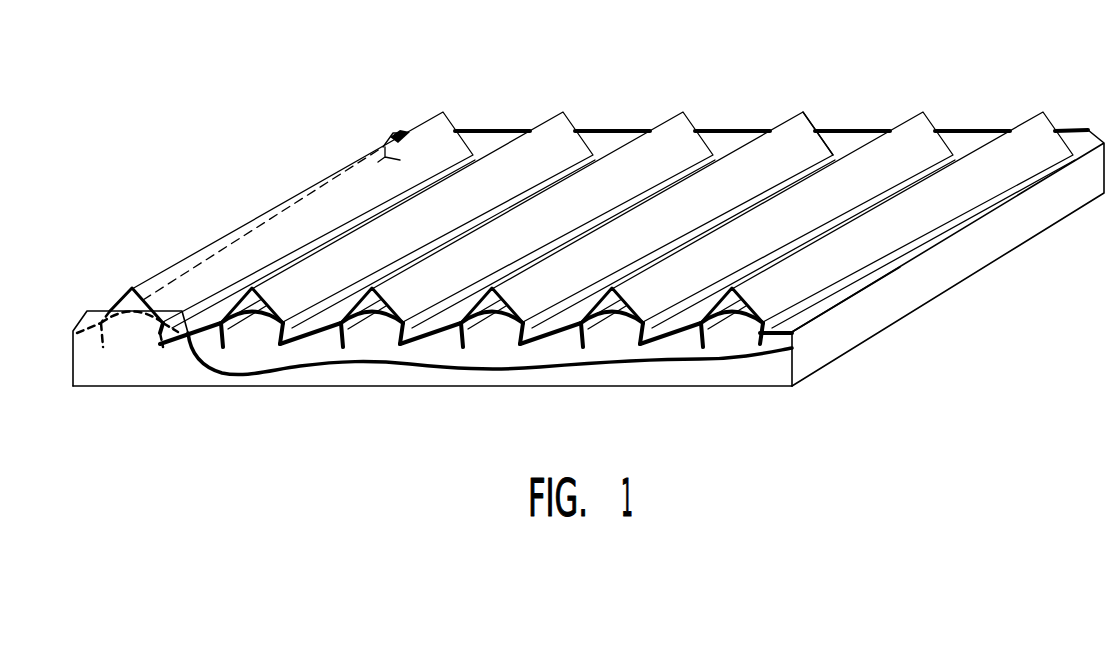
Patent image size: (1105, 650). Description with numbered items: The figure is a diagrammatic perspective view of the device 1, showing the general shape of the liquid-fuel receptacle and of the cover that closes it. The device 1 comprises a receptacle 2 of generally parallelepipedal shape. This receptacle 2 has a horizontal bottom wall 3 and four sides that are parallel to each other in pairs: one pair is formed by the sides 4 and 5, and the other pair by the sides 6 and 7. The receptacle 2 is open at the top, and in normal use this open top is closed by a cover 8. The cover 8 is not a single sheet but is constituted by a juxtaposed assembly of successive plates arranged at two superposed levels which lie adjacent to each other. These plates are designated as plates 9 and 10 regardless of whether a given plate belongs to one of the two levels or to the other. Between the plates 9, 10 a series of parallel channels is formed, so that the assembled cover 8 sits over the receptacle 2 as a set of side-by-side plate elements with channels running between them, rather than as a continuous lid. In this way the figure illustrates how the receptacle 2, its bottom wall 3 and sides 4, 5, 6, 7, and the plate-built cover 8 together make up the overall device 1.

The device 1 is at (889, 359).
The receptacle 2 is at (432, 383).
The bottom wall 3 is at (220, 386).
The side 4 is at (806, 350).
The side 5 is at (72, 340).
The side 6 is at (170, 383).
The side 7 is at (611, 139).
The cover 8 is at (804, 121).
The plate 9 is at (603, 328).
The plate 10 is at (544, 338).